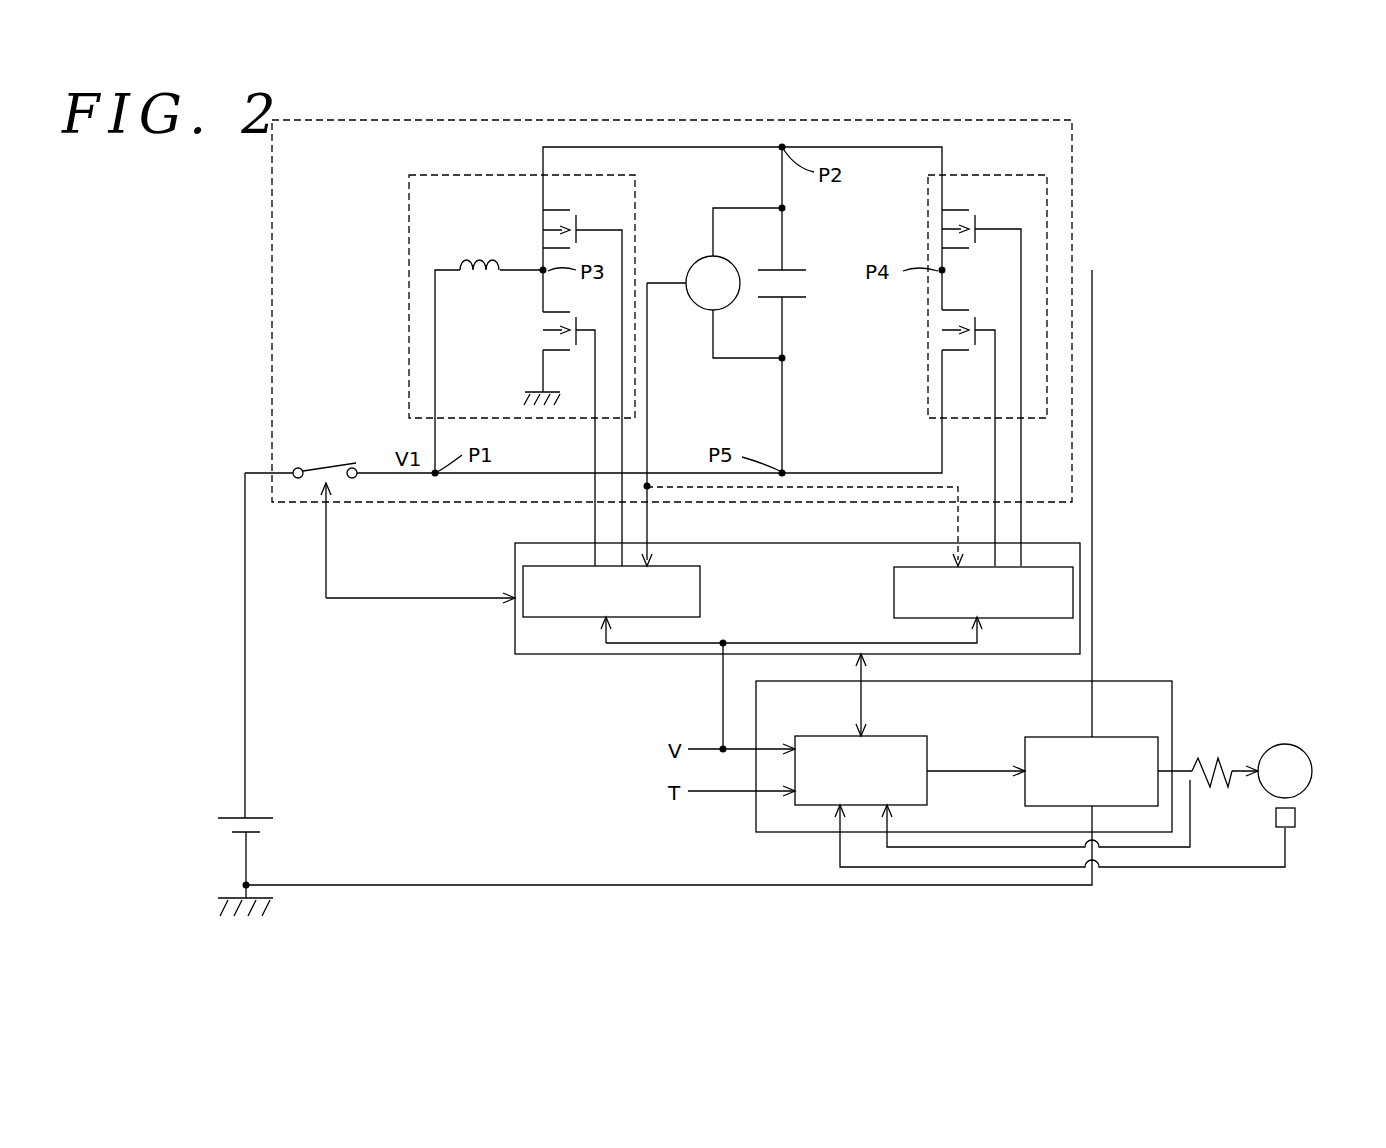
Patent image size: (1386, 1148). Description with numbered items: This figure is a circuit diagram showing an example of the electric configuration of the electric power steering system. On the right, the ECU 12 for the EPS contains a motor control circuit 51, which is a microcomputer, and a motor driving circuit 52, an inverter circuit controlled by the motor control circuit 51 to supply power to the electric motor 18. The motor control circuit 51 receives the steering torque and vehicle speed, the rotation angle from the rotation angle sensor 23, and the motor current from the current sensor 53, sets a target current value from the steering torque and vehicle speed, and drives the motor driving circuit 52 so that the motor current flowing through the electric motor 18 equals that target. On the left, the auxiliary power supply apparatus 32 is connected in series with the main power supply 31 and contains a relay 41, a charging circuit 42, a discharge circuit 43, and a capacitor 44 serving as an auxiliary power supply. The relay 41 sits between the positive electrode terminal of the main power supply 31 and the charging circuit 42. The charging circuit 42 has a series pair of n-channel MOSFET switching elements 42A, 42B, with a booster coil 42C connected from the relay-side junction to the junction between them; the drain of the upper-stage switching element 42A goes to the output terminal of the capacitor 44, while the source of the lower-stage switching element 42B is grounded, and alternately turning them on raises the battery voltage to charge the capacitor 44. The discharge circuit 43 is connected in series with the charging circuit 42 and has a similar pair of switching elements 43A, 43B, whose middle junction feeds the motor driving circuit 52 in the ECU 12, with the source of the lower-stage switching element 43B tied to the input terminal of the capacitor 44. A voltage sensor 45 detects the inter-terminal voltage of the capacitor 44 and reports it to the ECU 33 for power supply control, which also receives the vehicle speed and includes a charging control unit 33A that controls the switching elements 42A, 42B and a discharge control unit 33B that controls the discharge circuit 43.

The ECU for the EPS 12 is at (756, 820).
The electric motor 18 is at (1283, 744).
The rotation angle sensor 23 is at (1297, 816).
The main power supply 31 is at (262, 816).
The auxiliary power supply apparatus 32 is at (1072, 147).
The ECU for power supply control 33 is at (553, 655).
The charging control unit 33A is at (551, 566).
The discharge control unit 33B is at (911, 567).
The relay 41 is at (316, 466).
The charging circuit 42 is at (409, 212).
The upper-stage switching element 42A is at (540, 245).
The lower-stage switching element 42B is at (540, 335).
The booster coil 42C is at (478, 283).
The discharge circuit 43 is at (1047, 200).
The upper-stage switching element 43A is at (938, 242).
The lower-stage switching element 43B is at (938, 336).
The capacitor 44 is at (797, 300).
The voltage sensor 45 is at (700, 260).
The motor control circuit 51 is at (815, 736).
The motor driving circuit 52 is at (1121, 737).
The current sensor 53 is at (1200, 762).